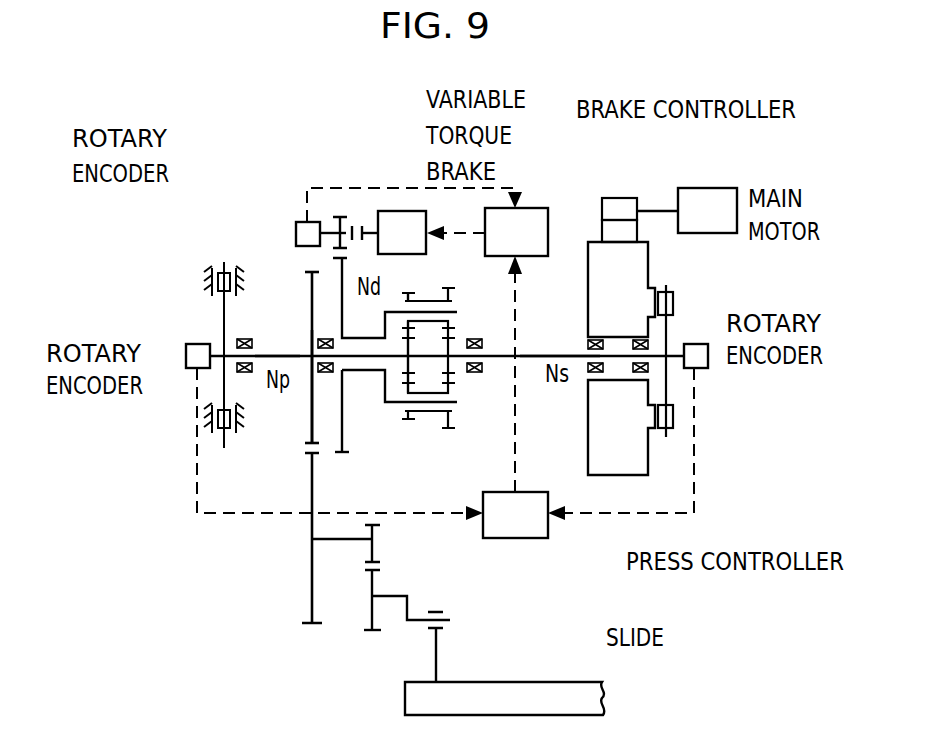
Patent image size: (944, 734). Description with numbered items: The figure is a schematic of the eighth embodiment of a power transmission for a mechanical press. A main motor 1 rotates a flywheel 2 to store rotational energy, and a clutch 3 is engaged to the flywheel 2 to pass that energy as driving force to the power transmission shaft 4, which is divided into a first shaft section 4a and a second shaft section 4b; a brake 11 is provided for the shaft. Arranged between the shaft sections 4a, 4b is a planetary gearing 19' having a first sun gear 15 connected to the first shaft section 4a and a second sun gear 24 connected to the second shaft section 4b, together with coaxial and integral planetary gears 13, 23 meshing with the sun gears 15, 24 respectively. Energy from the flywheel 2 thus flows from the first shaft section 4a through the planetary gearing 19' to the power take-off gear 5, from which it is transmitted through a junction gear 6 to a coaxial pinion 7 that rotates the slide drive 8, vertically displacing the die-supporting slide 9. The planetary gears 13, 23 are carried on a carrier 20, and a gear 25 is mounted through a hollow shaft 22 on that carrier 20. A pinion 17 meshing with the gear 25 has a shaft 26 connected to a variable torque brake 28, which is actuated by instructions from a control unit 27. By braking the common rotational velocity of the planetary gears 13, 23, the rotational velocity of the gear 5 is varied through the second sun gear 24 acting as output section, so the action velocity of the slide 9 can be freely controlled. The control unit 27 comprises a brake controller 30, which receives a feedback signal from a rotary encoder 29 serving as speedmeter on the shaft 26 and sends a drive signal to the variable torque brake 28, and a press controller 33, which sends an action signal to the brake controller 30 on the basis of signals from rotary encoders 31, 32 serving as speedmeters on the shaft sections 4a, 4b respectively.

The main motor 1 is at (706, 188).
The flywheel 2 is at (588, 458).
The clutch 3 is at (673, 414).
The power transmission shaft 4 is at (556, 345).
The first shaft section 4a is at (530, 366).
The second shaft section 4b is at (277, 350).
The power take-off gear 5 is at (304, 286).
The junction gear 6 is at (312, 584).
The pinion 7 is at (375, 546).
The slide drive 8 is at (464, 654).
The slide 9 is at (576, 692).
The brake 11 is at (218, 268).
The first planetary gear 13 is at (452, 300).
The first sun gear 15 is at (455, 364).
The pinion 17 is at (334, 212).
The planetary gearing 19' is at (443, 449).
The carrier 20 is at (394, 408).
The hollow shaft 22 is at (362, 377).
The second planetary gear 23 is at (414, 297).
The second sun gear 24 is at (402, 366).
The gear 25 is at (340, 413).
The shaft 26 is at (352, 222).
The control unit 27 is at (560, 242).
The variable torque brake 28 is at (398, 211).
The rotary encoder 29 is at (296, 222).
The brake controller 30 is at (532, 208).
The rotary encoder 31 is at (699, 342).
The rotary encoder 32 is at (192, 342).
The press controller 33 is at (540, 538).